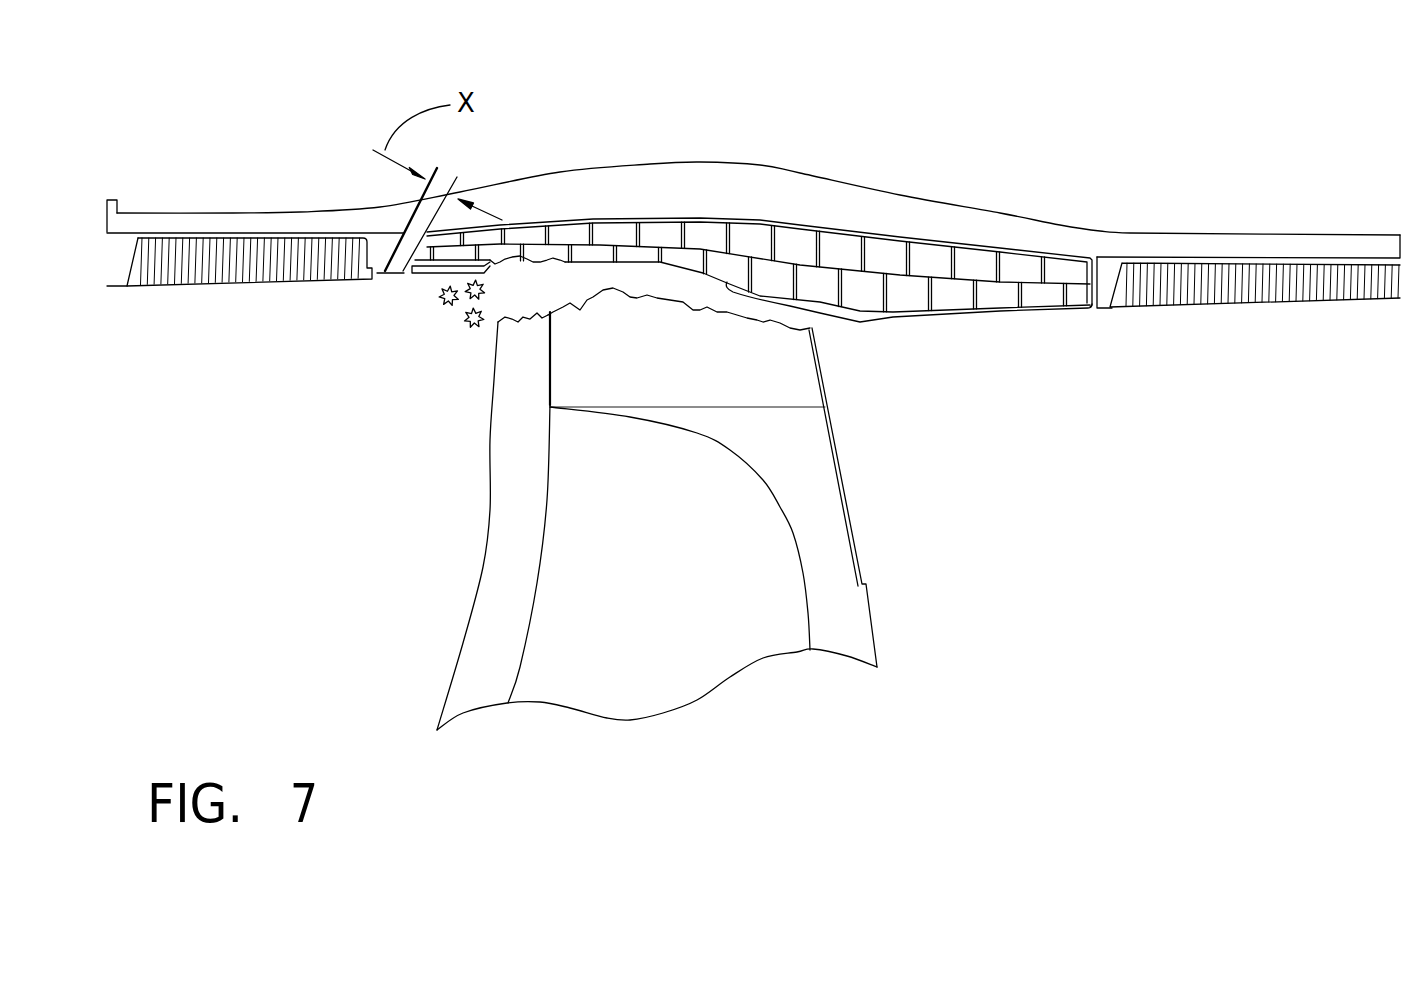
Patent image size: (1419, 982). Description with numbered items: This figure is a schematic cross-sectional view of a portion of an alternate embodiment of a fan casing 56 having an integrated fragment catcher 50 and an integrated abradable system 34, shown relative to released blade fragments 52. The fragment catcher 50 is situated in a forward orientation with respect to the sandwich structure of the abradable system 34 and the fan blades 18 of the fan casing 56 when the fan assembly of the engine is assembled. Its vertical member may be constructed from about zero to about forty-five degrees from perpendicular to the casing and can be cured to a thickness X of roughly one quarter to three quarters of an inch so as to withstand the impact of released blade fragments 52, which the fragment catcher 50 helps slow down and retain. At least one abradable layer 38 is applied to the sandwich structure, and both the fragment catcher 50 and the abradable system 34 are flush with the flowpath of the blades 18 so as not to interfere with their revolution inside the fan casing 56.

The fan blade 18 is at (737, 513).
The integrated abradable system 34 is at (929, 233).
The abradable layer 38 is at (993, 317).
The integrated fragment catcher 50 is at (407, 250).
The released blade fragments 52 is at (470, 301).
The fan casing 56 is at (1003, 117).